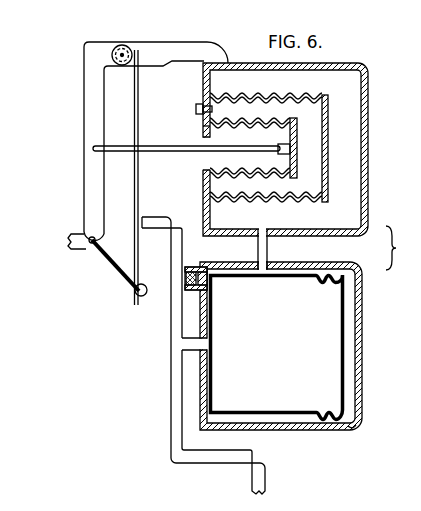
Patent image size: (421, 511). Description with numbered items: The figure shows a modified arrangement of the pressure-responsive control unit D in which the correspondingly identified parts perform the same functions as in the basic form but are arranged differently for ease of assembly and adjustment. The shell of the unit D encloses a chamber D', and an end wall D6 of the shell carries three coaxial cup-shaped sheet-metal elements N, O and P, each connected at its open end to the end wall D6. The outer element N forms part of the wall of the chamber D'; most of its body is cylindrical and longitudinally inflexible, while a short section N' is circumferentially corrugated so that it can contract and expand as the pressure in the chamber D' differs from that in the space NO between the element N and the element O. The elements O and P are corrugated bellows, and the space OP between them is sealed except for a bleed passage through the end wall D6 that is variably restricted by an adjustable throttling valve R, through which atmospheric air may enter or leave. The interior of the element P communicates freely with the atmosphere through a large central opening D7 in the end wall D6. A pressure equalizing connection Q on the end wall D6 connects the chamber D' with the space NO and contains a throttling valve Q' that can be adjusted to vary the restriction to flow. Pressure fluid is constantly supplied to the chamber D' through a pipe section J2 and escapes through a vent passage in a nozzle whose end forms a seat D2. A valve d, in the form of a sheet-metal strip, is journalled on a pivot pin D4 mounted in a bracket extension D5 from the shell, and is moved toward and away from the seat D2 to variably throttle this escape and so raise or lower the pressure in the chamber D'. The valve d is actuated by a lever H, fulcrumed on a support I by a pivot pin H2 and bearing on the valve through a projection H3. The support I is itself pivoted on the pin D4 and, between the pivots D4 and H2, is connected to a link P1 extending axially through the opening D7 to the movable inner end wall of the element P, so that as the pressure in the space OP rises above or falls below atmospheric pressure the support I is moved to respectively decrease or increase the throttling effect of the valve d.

The pivot pin D4 is at (119, 47).
The bracket extension D5 is at (181, 52).
The adjustable throttling valve R is at (198, 107).
The central opening D7 is at (208, 130).
The chamber space OP is at (316, 155).
The cup shaped element P is at (324, 172).
The cup shaped element O is at (329, 190).
The chamber space NO is at (336, 210).
The unit D is at (334, 248).
The support I is at (90, 207).
The seat D2 is at (142, 220).
The end wall D6 is at (206, 201).
The valve d is at (138, 247).
The throttling valve Q' is at (192, 264).
The pressure equalizing connection Q is at (197, 268).
The pivot pin H2 is at (80, 250).
The lever H is at (117, 268).
The projection H3 is at (144, 296).
The chamber D' is at (300, 345).
The cup shaped element N is at (305, 347).
The pipe section J2 is at (172, 397).
The corrugated section N' is at (355, 438).
The link P1 is at (186, 151).